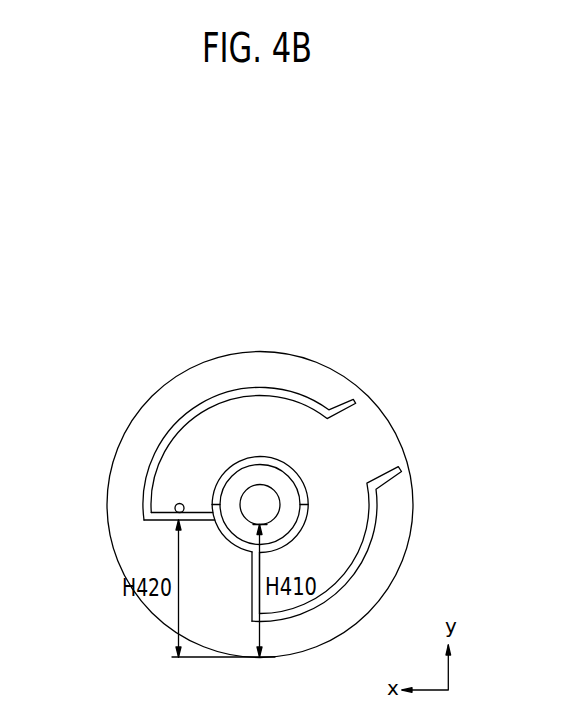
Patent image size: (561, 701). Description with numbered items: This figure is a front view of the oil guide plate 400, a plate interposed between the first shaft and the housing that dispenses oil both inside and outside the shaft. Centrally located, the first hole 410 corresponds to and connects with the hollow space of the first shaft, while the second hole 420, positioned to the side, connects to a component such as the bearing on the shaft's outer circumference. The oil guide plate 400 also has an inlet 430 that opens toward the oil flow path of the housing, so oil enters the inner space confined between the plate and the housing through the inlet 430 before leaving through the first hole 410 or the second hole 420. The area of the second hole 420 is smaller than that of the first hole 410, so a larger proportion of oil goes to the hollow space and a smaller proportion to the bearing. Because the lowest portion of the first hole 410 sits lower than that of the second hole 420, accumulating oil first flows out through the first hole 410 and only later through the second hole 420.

The oil guide plate 400 is at (328, 366).
The first hole 410 is at (253, 497).
The second hole 420 is at (176, 504).
The inlet 430 is at (372, 438).